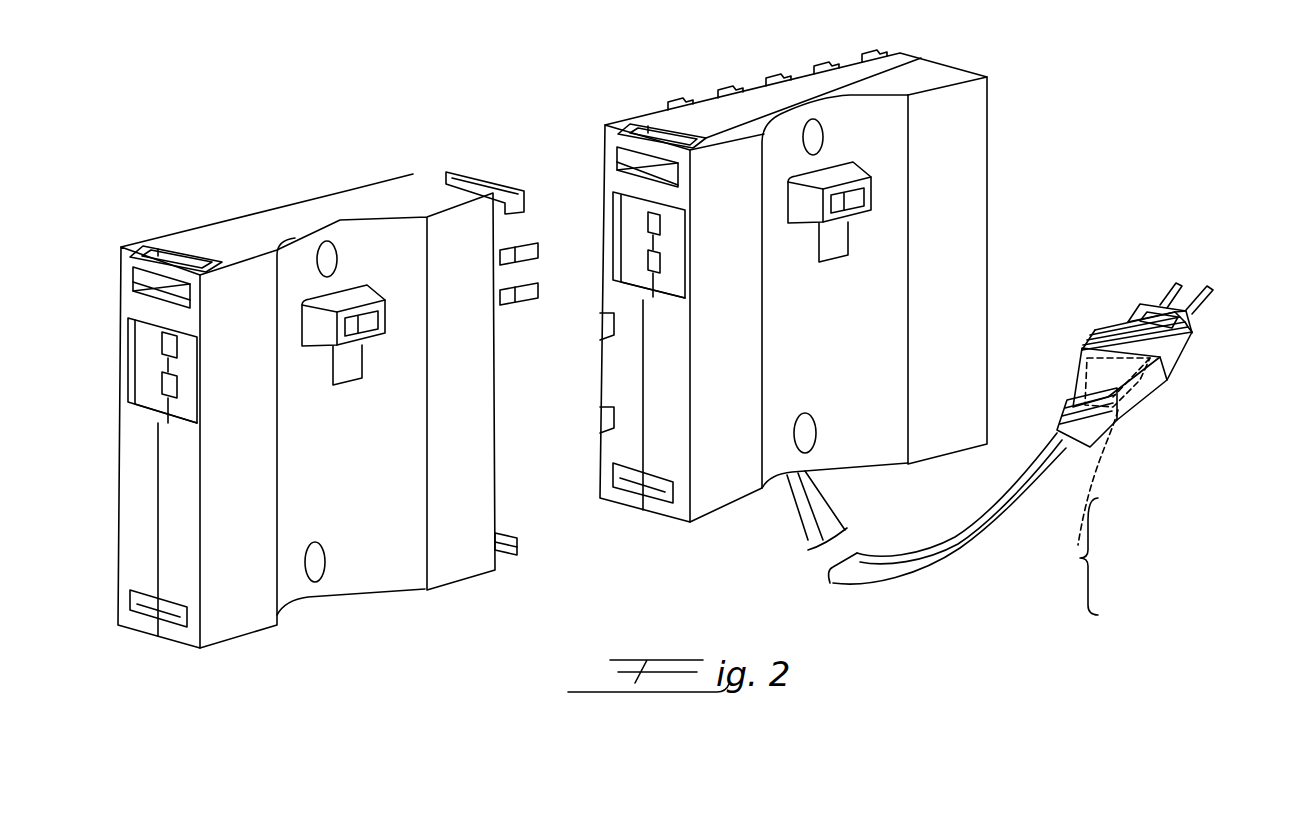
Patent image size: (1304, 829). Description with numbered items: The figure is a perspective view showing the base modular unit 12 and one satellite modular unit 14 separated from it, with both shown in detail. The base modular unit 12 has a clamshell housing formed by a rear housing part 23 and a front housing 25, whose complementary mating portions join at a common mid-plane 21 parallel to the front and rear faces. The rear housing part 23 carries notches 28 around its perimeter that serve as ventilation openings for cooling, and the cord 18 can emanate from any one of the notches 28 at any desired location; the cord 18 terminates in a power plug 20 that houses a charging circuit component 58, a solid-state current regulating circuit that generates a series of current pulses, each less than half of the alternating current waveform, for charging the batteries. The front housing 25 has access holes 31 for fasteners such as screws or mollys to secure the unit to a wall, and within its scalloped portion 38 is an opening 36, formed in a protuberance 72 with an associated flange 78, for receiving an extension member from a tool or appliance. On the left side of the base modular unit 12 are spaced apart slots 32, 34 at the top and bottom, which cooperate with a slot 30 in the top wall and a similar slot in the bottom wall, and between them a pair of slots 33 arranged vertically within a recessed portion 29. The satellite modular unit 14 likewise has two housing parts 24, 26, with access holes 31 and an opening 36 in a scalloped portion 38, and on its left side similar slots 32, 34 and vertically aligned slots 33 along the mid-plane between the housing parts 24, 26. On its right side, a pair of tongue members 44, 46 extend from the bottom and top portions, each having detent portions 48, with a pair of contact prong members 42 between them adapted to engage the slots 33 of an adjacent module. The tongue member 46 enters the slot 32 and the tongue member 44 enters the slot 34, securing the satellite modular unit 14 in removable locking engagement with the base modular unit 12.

The base modular unit 12 is at (991, 172).
The satellite modular unit 14 is at (497, 470).
The cord 18 is at (927, 572).
The power plug 20 is at (1125, 415).
The mid-plane 21 is at (763, 108).
The rear housing part 23 is at (882, 65).
The housing part 24 is at (262, 226).
The front housing 25 is at (948, 73).
The housing part 26 is at (432, 208).
The notches 28 is at (680, 108).
The recessed portion 29 is at (158, 381).
The slot 30 is at (176, 252).
The access holes 31 is at (332, 258).
The slot 32 is at (136, 264).
The slots 33 is at (648, 224).
The slot 34 is at (165, 607).
The opening 36 is at (378, 318).
The scalloped portion 38 is at (288, 585).
The contact prong members 42 is at (540, 250).
The tongue member 44 is at (521, 548).
The tongue member 46 is at (504, 192).
The detent portions 48 is at (447, 173).
The charging circuit component 58 is at (1085, 372).
The protuberance 72 is at (384, 296).
The flange 78 is at (355, 368).